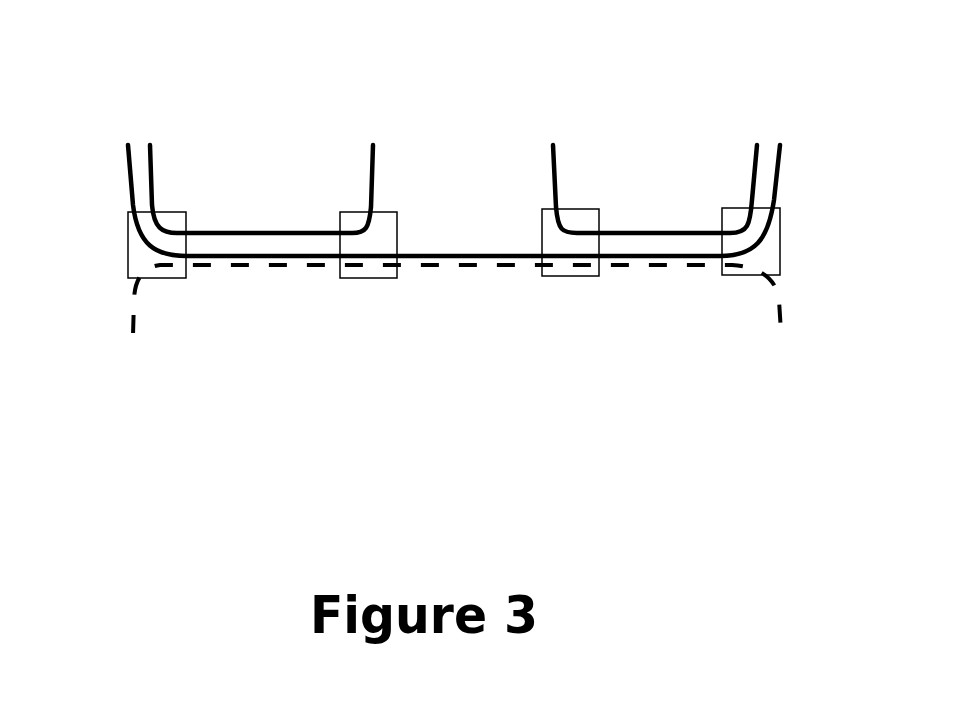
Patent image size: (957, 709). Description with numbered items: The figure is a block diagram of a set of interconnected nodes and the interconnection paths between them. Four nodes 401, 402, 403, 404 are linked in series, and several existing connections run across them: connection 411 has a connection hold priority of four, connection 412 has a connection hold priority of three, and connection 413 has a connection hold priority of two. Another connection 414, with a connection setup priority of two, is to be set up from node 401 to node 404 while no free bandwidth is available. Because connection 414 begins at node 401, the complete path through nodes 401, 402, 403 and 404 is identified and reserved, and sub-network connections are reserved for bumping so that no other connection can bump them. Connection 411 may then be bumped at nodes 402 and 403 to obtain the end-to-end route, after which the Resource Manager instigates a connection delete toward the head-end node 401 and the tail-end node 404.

The node 401 is at (128, 247).
The node 402 is at (397, 225).
The node 403 is at (542, 223).
The node 404 is at (780, 227).
The connection 411 is at (465, 252).
The connection 412 is at (270, 232).
The connection 413 is at (640, 229).
The connection 414 is at (493, 266).